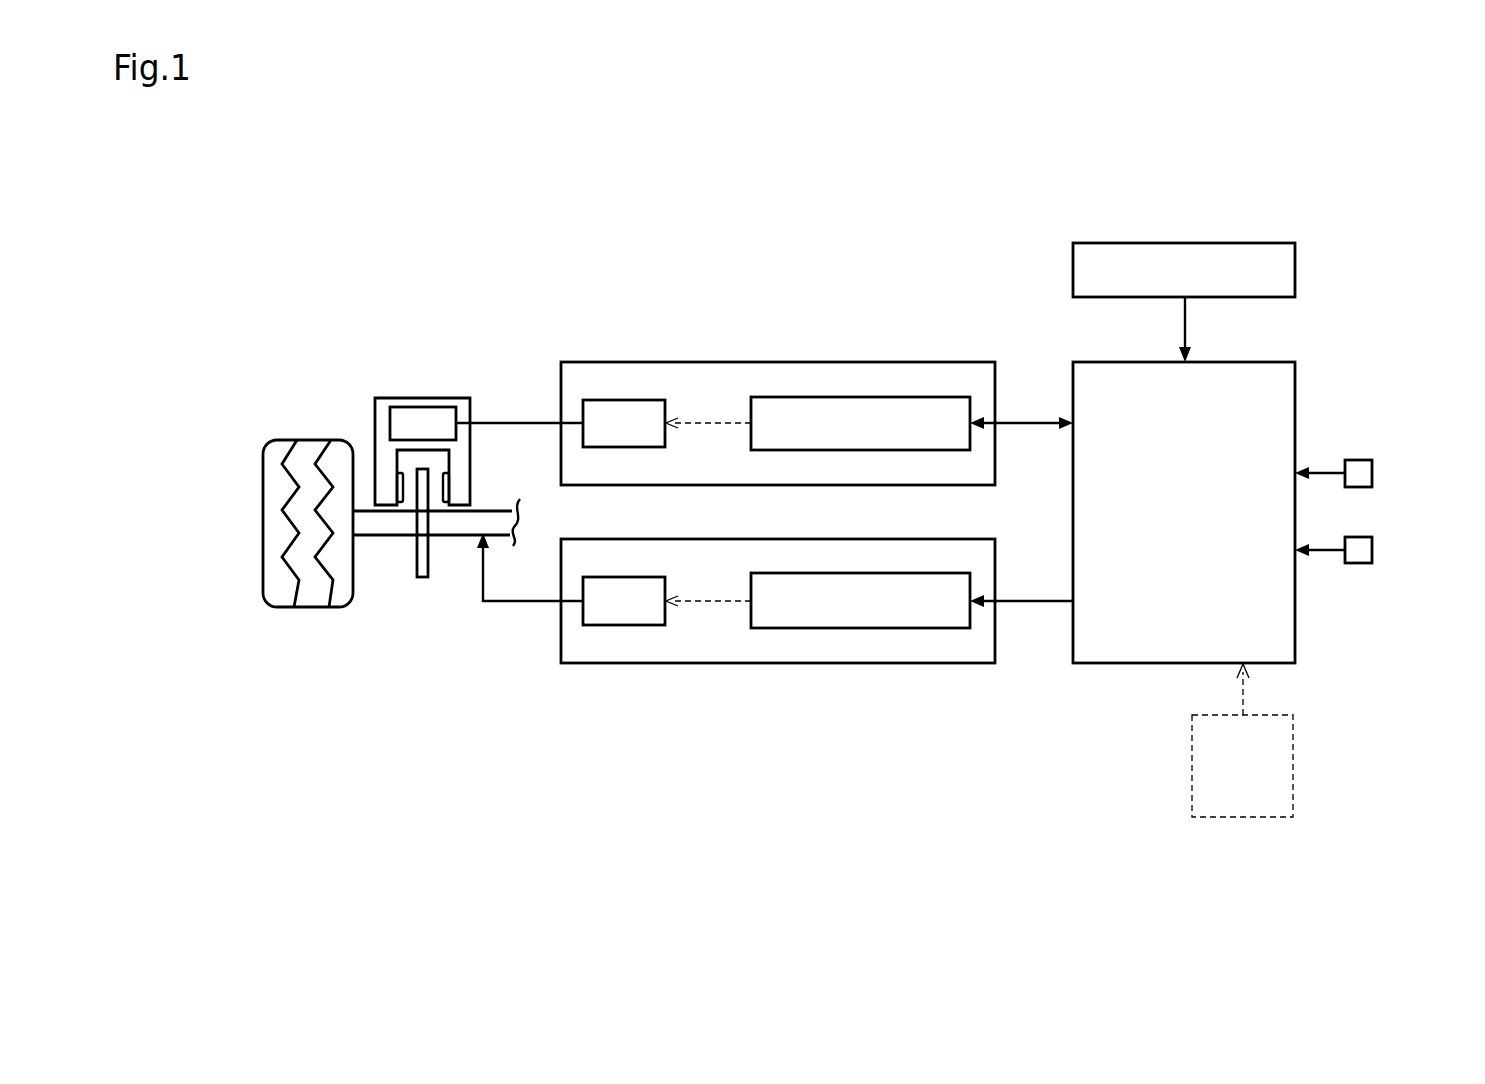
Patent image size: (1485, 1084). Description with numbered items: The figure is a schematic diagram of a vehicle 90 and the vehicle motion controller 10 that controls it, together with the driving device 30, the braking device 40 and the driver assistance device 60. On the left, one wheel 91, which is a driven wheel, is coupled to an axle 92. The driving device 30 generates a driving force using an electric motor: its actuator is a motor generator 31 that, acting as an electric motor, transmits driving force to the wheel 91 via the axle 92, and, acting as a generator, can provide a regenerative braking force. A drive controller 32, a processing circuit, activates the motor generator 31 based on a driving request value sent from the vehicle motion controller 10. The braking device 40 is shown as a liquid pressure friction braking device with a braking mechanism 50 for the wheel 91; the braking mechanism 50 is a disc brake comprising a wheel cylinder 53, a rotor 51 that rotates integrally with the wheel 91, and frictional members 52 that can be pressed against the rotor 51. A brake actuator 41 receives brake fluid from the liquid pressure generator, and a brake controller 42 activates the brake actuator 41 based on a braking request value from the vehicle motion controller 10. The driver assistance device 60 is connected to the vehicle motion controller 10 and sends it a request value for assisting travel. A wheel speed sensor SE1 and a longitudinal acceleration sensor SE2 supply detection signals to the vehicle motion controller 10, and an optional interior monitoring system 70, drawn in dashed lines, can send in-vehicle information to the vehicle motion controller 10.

The vehicle motion controller 10 is at (1228, 362).
The driving device 30 is at (776, 663).
The motor generator 31 is at (622, 577).
The drive controller 32 is at (909, 573).
The braking device 40 is at (777, 362).
The brake actuator 41 is at (622, 400).
The brake controller 42 is at (909, 397).
The braking mechanism 50 is at (355, 370).
The rotor 51 is at (422, 578).
The frictional members 52 is at (401, 471).
The wheel cylinder 53 is at (421, 407).
The driver assistance device 60 is at (1232, 243).
The interior monitoring system 70 is at (1293, 768).
The vehicle 90 is at (283, 240).
The wheel 91 is at (305, 608).
The axle 92 is at (388, 537).
The wheel speed sensor SE1 is at (1373, 473).
The longitudinal acceleration sensor SE2 is at (1373, 550).